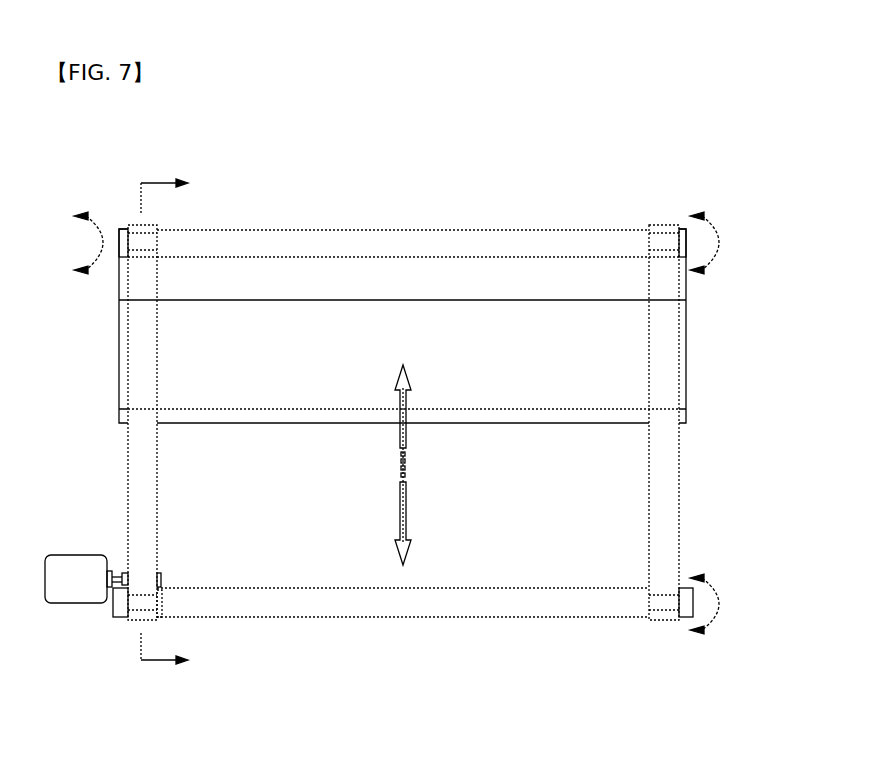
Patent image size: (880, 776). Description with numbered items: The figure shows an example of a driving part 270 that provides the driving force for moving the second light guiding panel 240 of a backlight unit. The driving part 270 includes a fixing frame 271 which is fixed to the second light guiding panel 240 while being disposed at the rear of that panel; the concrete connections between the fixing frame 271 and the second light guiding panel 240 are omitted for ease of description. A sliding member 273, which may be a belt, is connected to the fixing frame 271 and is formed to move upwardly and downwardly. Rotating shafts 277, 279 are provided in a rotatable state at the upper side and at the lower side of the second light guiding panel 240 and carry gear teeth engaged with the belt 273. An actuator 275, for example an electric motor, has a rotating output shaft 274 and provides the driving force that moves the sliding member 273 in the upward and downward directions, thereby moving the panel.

The driving part 270 is at (246, 196).
The fixing frame 271 is at (447, 312).
The sliding member 273 is at (142, 358).
The second light guiding panel 240 is at (298, 272).
The rotating shaft 277 is at (375, 243).
The rotating shaft 279 is at (506, 603).
The output shaft 274 is at (118, 570).
The actuator 275 is at (72, 592).